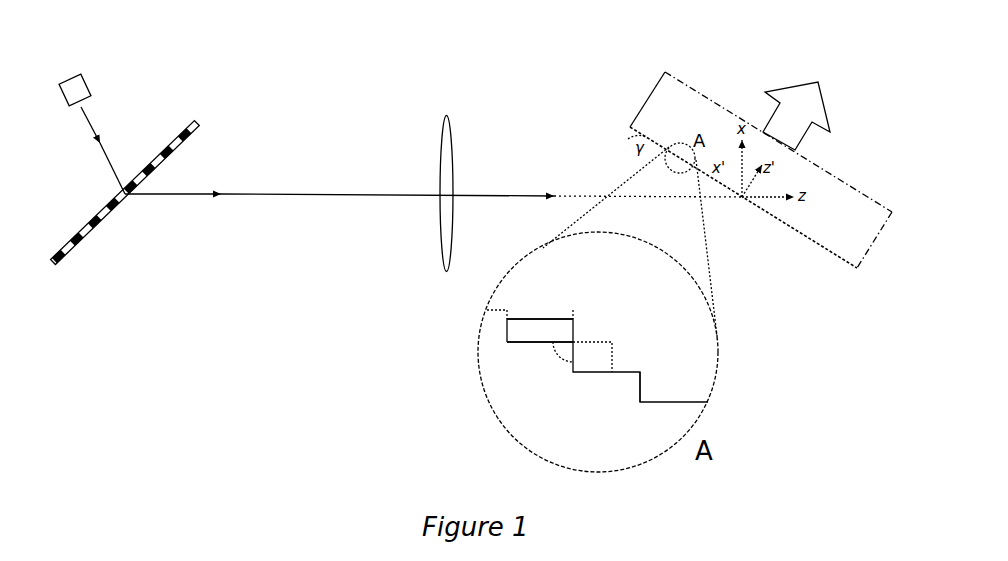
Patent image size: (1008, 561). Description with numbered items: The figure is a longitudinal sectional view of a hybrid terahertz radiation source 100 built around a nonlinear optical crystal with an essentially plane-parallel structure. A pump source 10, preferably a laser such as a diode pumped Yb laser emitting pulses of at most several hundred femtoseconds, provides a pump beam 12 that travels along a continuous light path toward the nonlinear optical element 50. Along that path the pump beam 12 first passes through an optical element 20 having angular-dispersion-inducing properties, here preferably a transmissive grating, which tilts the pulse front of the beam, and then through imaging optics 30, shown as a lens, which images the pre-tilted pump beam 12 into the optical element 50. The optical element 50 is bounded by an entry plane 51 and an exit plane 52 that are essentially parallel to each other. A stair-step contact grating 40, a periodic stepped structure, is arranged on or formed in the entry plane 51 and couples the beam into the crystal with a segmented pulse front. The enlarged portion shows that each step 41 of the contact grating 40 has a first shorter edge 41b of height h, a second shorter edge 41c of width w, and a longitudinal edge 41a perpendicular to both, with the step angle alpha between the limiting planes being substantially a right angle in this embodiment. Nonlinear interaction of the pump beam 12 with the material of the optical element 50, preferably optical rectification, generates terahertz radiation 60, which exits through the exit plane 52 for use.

The radiation source 100 is at (346, 79).
The pump source 10 is at (66, 108).
The pump beam 12 is at (89, 117).
The optical element having angular-dispersion-inducing properties 20 is at (103, 222).
The imaging optics 30 is at (445, 140).
The stair-step contact grating 40 is at (795, 233).
The step 41 is at (657, 390).
The longitudinal edge 41a is at (640, 402).
The first shorter edge 41b is at (508, 330).
The second shorter edge 41c is at (527, 342).
The optical element 50 is at (660, 103).
The entry plane 51 is at (630, 127).
The exit plane 52 is at (707, 93).
The terahertz radiation 60 is at (815, 103).